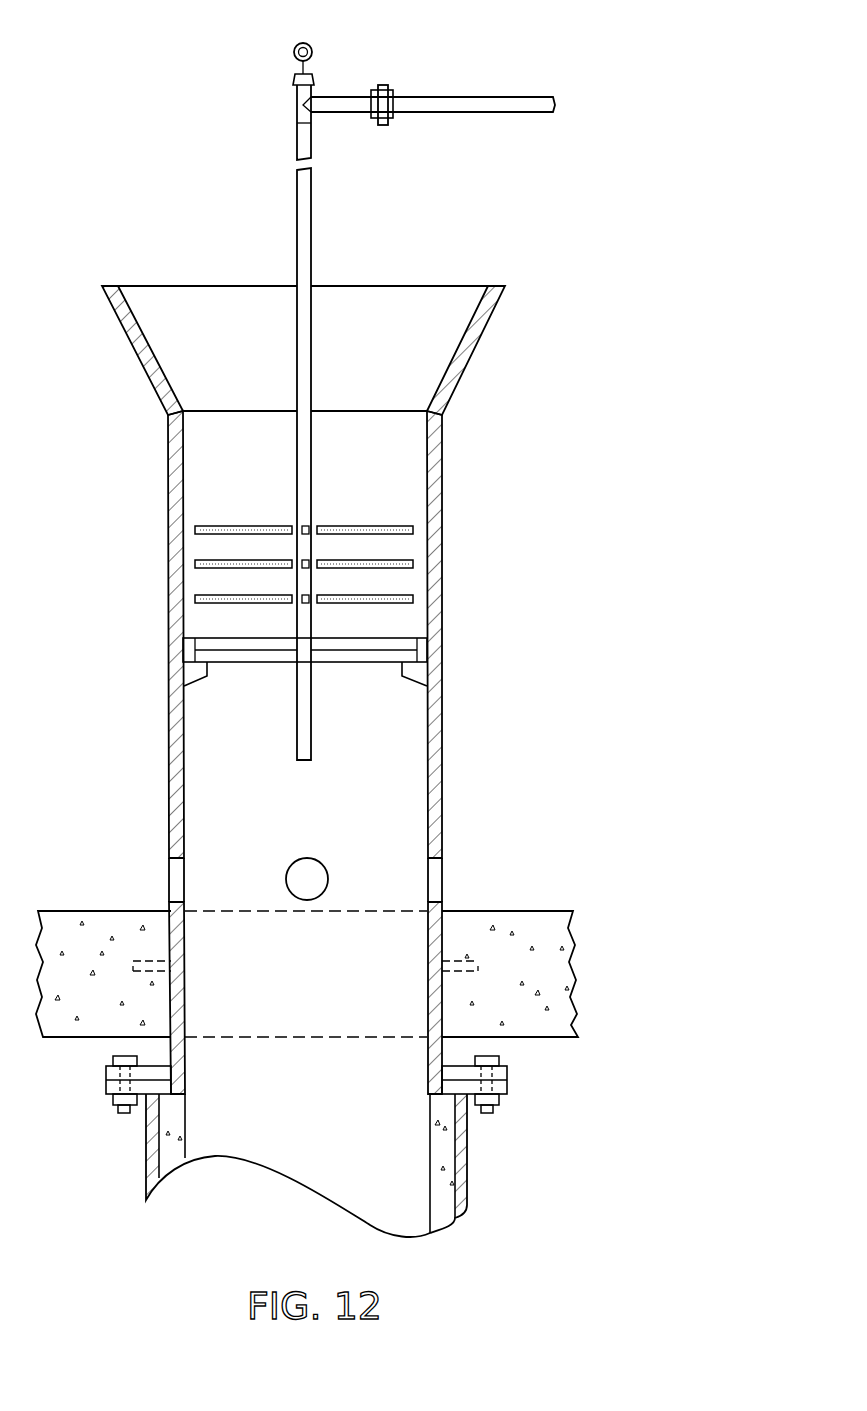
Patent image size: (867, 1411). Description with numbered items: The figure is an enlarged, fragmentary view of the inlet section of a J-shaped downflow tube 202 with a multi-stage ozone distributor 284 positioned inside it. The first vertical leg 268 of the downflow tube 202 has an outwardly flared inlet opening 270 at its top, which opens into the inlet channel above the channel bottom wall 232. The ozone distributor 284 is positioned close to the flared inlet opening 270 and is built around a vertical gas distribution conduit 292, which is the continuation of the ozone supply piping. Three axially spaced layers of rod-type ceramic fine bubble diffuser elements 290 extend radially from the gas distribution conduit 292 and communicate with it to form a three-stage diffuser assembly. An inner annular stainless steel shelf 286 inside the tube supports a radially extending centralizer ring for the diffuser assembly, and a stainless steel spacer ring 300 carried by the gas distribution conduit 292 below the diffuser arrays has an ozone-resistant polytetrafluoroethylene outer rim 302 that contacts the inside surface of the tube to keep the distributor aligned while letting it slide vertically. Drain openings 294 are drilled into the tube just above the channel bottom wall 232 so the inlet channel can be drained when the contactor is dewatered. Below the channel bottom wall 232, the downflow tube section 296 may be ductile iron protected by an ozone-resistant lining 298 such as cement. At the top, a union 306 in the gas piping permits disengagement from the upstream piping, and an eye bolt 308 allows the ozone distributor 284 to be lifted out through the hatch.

The downflow tube 202 is at (552, 676).
The channel bottom wall 232 is at (573, 945).
The first vertical leg 268 is at (443, 752).
The flared inlet opening 270 is at (468, 357).
The ozone distributor 284 is at (476, 505).
The annular shelf 286 is at (402, 677).
The fine bubble diffuser elements 290 is at (195, 530).
The gas distribution conduit 292 is at (297, 454).
The drain openings 294 is at (170, 880).
The downflow tube section 296 is at (467, 1163).
The ozone-resistant lining 298 is at (428, 1152).
The spacer ring 300 is at (238, 663).
The outer rim 302 is at (421, 644).
The union 306 is at (383, 84).
The eye bolt 308 is at (298, 45).